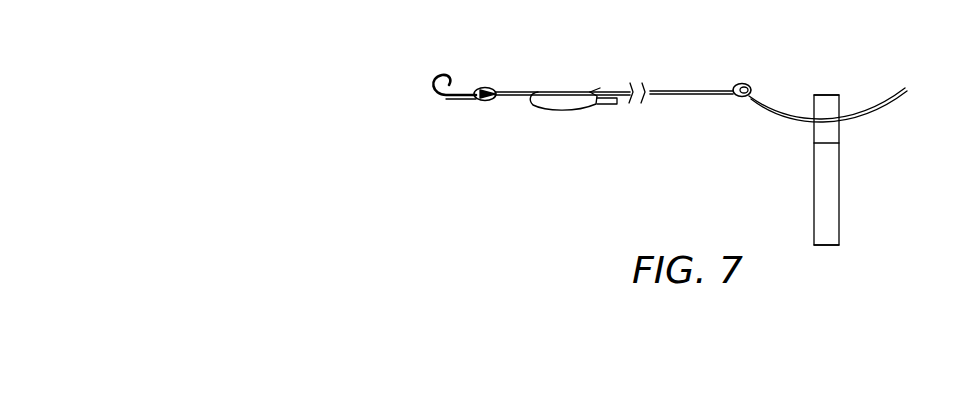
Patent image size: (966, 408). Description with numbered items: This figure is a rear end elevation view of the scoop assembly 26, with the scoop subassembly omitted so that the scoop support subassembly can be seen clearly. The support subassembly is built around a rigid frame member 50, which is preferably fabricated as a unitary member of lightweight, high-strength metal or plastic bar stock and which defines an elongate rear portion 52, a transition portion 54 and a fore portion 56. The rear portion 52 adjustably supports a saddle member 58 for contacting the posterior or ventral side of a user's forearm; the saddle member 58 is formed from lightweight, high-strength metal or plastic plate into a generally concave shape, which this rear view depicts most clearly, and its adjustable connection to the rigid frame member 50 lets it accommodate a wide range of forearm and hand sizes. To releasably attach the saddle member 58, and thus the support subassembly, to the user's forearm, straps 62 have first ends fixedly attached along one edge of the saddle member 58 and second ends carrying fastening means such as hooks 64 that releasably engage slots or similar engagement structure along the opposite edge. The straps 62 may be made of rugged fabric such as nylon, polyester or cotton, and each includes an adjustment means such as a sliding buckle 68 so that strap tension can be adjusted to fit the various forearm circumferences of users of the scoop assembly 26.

The scoop assembly 26 is at (632, 152).
The rigid frame member 50 is at (840, 178).
The elongate rear portion 52 is at (822, 133).
The transition portion 54 is at (822, 198).
The fore portion 56 is at (828, 100).
The saddle member 58 is at (887, 103).
The straps 62 is at (677, 97).
The hooks 64 is at (449, 102).
The sliding buckle 68 is at (571, 110).